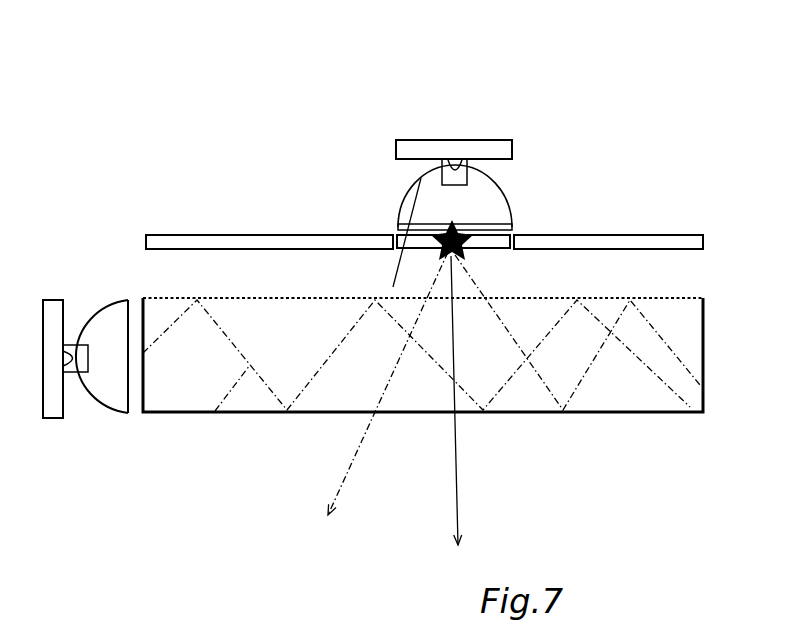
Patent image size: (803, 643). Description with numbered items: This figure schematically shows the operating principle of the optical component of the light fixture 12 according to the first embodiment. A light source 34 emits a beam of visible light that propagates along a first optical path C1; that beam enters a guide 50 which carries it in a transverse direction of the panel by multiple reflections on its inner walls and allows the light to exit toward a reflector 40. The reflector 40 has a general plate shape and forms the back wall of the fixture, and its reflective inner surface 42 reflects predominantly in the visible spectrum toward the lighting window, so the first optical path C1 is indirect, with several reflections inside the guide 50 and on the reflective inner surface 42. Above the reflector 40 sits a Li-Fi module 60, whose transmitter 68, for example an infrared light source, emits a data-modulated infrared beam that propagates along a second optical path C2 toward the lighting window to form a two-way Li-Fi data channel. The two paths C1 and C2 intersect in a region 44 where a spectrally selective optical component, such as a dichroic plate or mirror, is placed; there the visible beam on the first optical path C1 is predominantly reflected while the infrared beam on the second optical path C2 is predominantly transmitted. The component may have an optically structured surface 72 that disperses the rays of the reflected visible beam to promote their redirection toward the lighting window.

The light fixture 12 is at (277, 45).
The light source 34 is at (101, 293).
The reflector 40 is at (230, 234).
The reflective inner surface 42 is at (173, 252).
The region 44 is at (449, 232).
The guide 50 is at (650, 325).
The Li-Fi module 60 is at (480, 126).
The transmitter 68 is at (480, 204).
The optically structured surface 72 is at (393, 287).
The first optical path C1 is at (485, 305).
The second optical path C2 is at (457, 472).